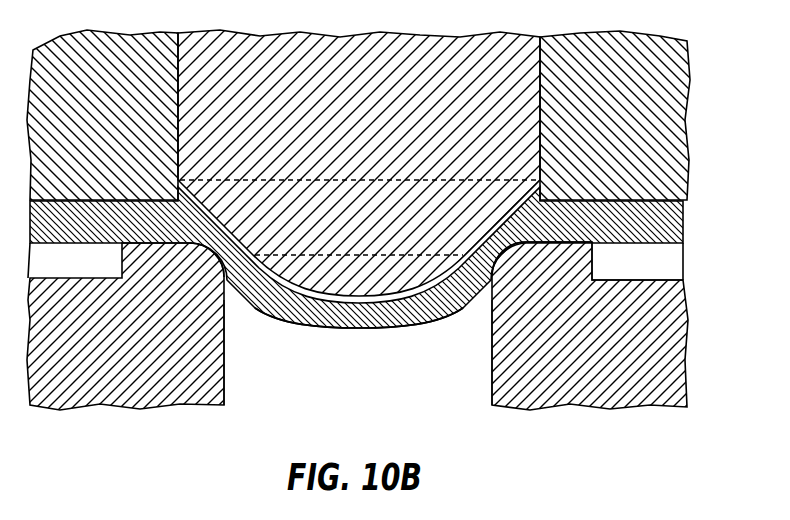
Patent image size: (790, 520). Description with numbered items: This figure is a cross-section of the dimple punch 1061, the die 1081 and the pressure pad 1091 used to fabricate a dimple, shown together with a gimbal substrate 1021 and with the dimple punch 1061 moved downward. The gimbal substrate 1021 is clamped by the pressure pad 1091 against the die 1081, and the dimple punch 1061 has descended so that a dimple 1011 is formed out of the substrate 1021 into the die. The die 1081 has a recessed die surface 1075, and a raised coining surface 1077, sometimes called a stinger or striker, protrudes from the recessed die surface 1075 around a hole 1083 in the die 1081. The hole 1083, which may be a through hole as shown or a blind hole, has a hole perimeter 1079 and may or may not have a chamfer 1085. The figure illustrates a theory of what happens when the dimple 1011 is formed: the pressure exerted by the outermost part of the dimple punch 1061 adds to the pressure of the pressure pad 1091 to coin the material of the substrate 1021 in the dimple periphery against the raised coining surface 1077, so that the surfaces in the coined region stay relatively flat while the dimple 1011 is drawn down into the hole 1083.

The pressure pad 1091 is at (134, 131).
The dimple punch 1061 is at (392, 131).
The gimbal substrate 1021 is at (109, 236).
The dimple 1011 is at (350, 328).
The die 1081 is at (134, 371).
The chamfer 1085 is at (207, 263).
The hole 1083 is at (273, 403).
The recessed die surface 1075 is at (664, 279).
The raised coining surface 1077 is at (548, 241).
The hole perimeter 1079 is at (525, 247).